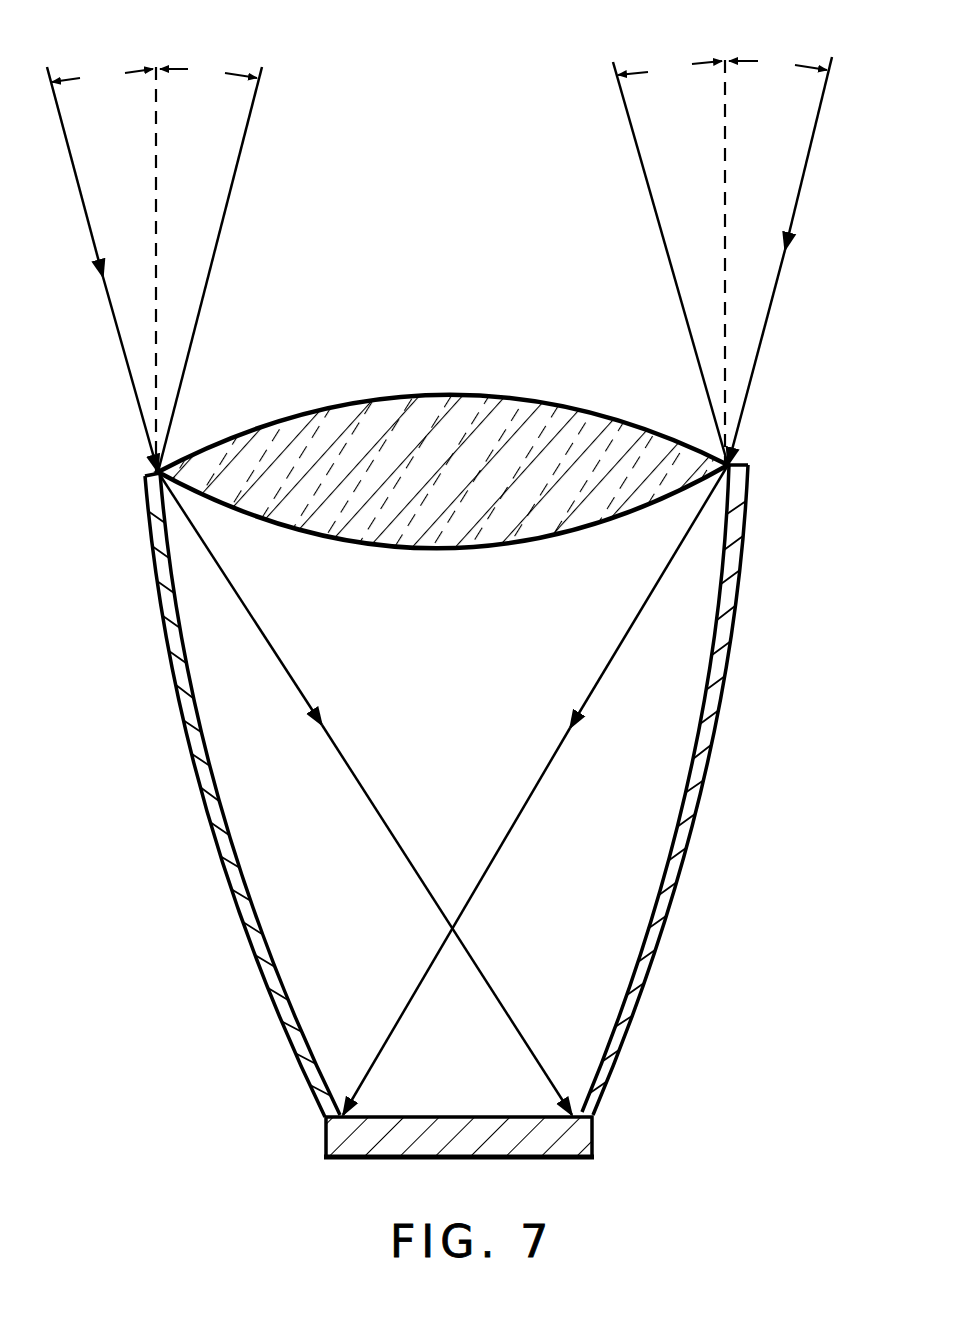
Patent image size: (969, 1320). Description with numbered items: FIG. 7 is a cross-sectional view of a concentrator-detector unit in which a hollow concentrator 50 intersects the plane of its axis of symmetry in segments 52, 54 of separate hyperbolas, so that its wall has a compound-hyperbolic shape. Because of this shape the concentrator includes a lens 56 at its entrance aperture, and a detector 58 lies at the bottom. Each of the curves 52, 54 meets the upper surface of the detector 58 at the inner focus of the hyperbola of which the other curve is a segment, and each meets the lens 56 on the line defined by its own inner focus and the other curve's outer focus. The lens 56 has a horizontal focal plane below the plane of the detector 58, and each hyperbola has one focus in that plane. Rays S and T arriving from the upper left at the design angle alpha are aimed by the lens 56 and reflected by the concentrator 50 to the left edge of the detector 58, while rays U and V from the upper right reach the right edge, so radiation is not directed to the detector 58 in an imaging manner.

The hollow concentrator 50 is at (828, 567).
The hyperbola segment 52 is at (236, 855).
The hyperbola segment 54 is at (670, 857).
The lens 56 is at (410, 395).
The detector 58 is at (580, 1160).